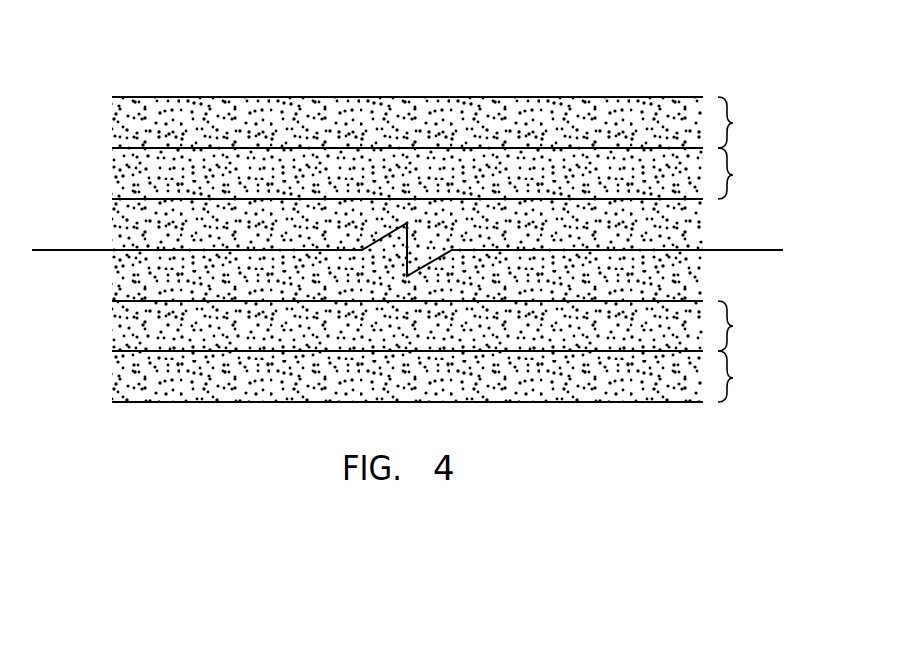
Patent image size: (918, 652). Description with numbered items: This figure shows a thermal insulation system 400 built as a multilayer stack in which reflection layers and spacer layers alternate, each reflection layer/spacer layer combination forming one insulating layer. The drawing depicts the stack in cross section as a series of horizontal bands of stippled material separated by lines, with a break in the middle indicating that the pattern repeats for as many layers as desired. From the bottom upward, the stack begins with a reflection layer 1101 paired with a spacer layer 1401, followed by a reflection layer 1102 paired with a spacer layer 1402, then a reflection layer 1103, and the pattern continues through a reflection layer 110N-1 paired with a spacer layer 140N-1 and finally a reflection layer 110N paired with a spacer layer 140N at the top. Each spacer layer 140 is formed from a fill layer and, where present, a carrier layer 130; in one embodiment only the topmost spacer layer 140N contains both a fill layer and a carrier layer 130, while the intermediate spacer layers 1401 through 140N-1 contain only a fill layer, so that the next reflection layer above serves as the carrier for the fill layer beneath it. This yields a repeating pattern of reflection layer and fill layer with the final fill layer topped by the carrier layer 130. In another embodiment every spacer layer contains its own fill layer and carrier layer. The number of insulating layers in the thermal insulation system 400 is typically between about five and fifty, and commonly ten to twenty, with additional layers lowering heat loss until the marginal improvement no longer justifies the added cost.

The thermal insulation system 400 is at (664, 63).
The carrier layer 130 is at (407, 97).
The reflection layer 110N is at (112, 148).
The reflection layer 110N-1 is at (112, 199).
The reflection layer 1103 is at (112, 301).
The reflection layer 1102 is at (112, 351).
The reflection layer 1101 is at (112, 402).
The spacer layer 140 is at (424, 249).
The spacer layer 140N is at (733, 123).
The spacer layer 140N-1 is at (733, 175).
The spacer layer 1402 is at (733, 326).
The spacer layer 1401 is at (733, 378).